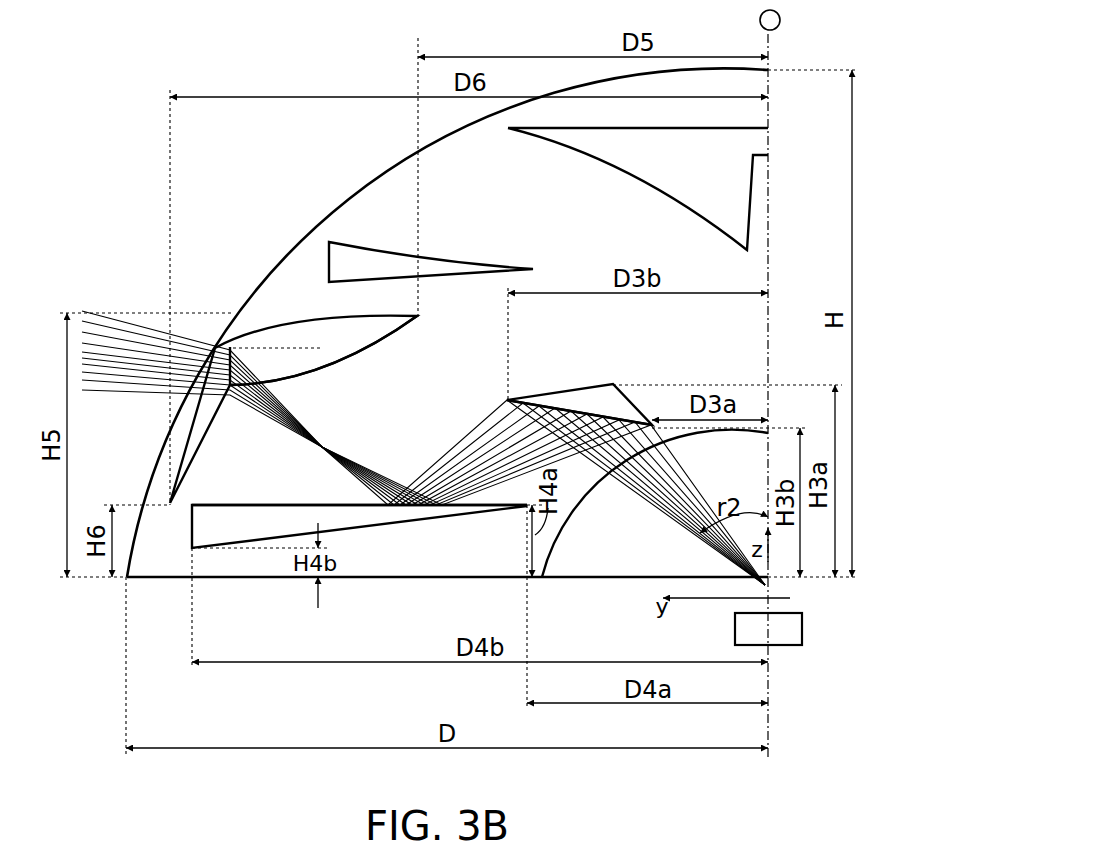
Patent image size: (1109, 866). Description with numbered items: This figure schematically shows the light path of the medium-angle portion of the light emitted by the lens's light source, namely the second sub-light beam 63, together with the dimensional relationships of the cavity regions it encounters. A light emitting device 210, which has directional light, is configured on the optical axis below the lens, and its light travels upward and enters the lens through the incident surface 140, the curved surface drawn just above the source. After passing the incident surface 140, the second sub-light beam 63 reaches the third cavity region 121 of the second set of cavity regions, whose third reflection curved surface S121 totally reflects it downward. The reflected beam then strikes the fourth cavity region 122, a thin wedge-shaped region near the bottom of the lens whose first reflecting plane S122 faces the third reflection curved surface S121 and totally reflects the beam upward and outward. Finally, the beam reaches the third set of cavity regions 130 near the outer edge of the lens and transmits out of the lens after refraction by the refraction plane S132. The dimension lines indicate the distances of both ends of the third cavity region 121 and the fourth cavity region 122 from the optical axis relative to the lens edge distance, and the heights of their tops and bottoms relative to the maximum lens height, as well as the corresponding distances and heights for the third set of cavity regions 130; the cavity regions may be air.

The second sub-light beam 63 is at (118, 320).
The third set of cavity regions 130 is at (233, 358).
The refraction plane S132 is at (262, 384).
The third cavity region 121 is at (578, 401).
The third reflection curved surface S121 is at (647, 421).
The fourth cavity region 122 is at (225, 517).
The first reflecting plane S122 is at (295, 501).
The incident surface 140 is at (546, 573).
The light emitting device 210 is at (790, 636).